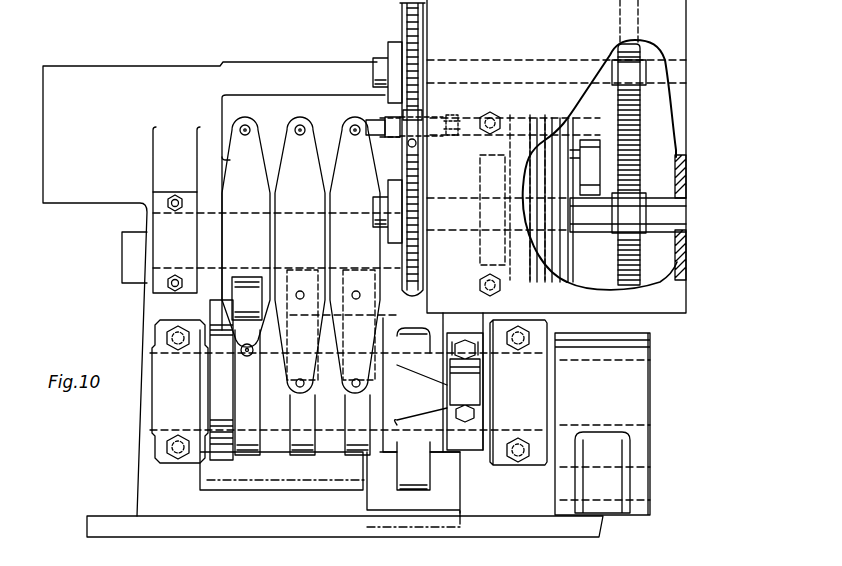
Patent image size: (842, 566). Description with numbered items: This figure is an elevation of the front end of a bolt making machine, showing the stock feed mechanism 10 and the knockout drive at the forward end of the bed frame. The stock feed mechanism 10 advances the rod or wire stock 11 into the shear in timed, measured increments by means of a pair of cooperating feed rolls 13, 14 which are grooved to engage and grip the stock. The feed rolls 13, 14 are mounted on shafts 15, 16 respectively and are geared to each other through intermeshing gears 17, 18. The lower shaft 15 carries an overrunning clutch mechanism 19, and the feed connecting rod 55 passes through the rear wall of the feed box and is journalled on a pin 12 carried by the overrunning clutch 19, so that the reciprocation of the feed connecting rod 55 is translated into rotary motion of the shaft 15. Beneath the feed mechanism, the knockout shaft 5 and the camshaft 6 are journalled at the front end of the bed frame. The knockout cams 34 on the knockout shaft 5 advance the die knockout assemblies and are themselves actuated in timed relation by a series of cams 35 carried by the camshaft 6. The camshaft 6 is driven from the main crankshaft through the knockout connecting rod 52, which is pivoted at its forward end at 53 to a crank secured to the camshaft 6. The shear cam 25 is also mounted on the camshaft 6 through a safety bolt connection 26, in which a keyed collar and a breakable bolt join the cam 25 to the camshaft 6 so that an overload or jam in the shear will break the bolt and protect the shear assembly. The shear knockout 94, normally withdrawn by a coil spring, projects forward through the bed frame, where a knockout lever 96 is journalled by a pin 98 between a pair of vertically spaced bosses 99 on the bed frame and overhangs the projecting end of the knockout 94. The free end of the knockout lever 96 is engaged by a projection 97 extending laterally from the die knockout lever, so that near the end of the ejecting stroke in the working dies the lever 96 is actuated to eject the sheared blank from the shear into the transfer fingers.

The knockout shaft 5 is at (180, 228).
The camshaft 6 is at (230, 416).
The stock feed mechanism 10 is at (685, 146).
The rod or wire stock 11 is at (407, 145).
The pin 12 is at (598, 158).
The feed roll 13 is at (418, 168).
The feed roll 14 is at (407, 13).
The lower shaft 15 is at (588, 228).
The shaft 16 is at (553, 72).
The gear 17 is at (652, 252).
The gear 18 is at (640, 45).
The overrunning clutch mechanism 19 is at (558, 150).
The shear cam 25 is at (430, 472).
The safety bolt connection 26 is at (468, 398).
The knockout cam 34 is at (301, 255).
The cam 35 is at (356, 444).
The knockout connecting rod 52 is at (603, 522).
The pivot 53 is at (640, 458).
The feed connecting rod 55 is at (660, 174).
The shear knockout 94 is at (400, 117).
The knockout lever 96 is at (398, 122).
The projection 97 is at (380, 122).
The pin 98 is at (492, 114).
The bosses 99 is at (458, 125).